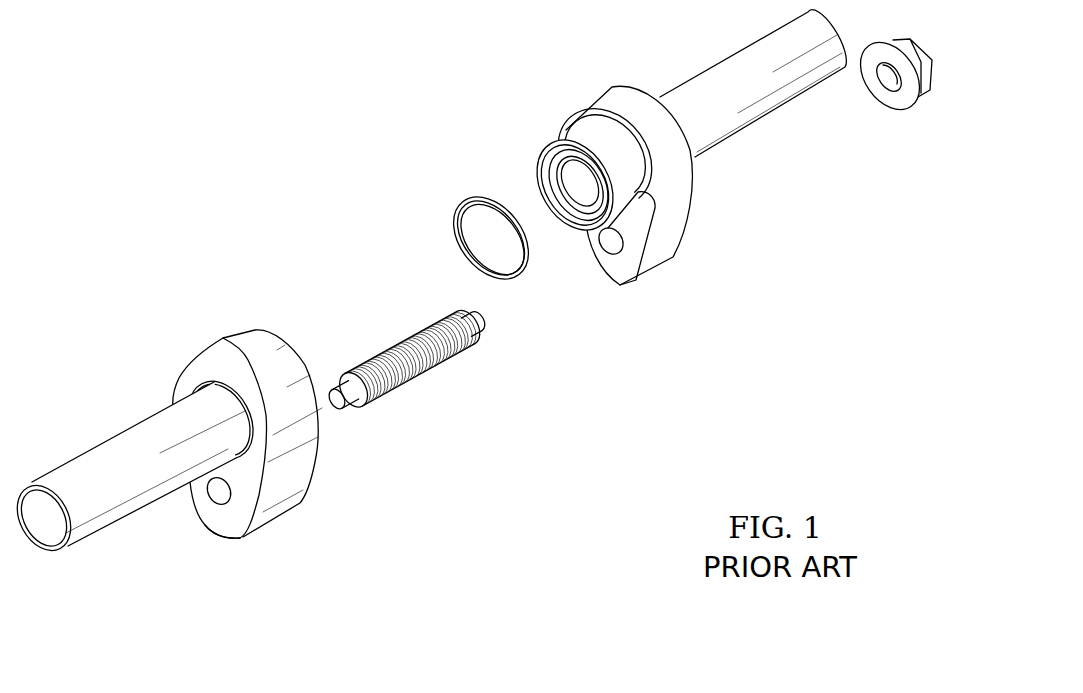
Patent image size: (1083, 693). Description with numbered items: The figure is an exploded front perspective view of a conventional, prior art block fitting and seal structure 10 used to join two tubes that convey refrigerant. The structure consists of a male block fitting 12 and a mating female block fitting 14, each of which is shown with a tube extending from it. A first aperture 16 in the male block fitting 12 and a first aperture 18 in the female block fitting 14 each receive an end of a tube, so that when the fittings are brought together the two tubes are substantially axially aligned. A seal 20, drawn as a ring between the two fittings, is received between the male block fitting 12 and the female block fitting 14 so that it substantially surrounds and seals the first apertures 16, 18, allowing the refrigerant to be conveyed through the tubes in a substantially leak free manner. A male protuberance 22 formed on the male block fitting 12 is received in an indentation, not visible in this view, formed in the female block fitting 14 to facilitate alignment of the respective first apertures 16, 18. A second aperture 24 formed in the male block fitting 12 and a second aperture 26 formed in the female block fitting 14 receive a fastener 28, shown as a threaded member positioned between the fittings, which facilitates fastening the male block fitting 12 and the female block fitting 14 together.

The block fitting and seal structure 10 is at (94, 60).
The male block fitting 12 is at (684, 210).
The female block fitting 14 is at (164, 438).
The first aperture 16 is at (574, 212).
The first aperture 18 is at (236, 536).
The seal 20 is at (481, 197).
The male protuberance 22 is at (641, 193).
The second aperture 24 is at (609, 241).
The second aperture 26 is at (218, 492).
The fastener 28 is at (437, 352).